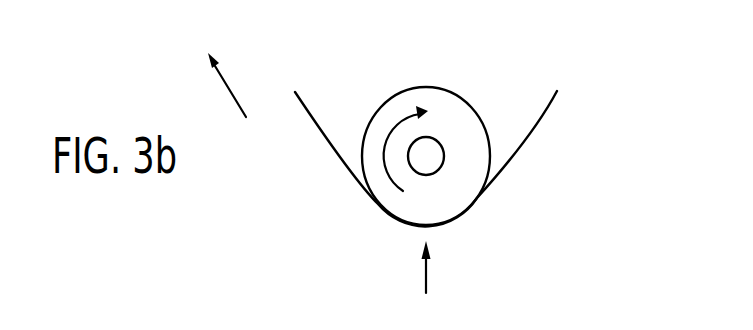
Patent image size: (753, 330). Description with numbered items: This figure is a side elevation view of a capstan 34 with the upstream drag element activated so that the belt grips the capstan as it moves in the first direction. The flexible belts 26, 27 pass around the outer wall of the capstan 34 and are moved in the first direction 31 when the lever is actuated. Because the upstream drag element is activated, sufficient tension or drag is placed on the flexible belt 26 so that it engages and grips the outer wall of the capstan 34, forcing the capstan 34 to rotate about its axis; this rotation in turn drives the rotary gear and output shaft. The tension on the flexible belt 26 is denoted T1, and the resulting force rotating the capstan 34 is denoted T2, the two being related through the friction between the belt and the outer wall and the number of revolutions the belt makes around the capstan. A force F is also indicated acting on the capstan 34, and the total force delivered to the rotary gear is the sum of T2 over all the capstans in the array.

The flexible belt 26 is at (426, 158).
The flexible belt 27 is at (520, 150).
The first direction 31 is at (229, 89).
The capstan 34 is at (424, 87).
The tension on the flexible belt T1 is at (578, 134).
The force rotating the capstan T2 is at (385, 148).
The force F is at (419, 267).